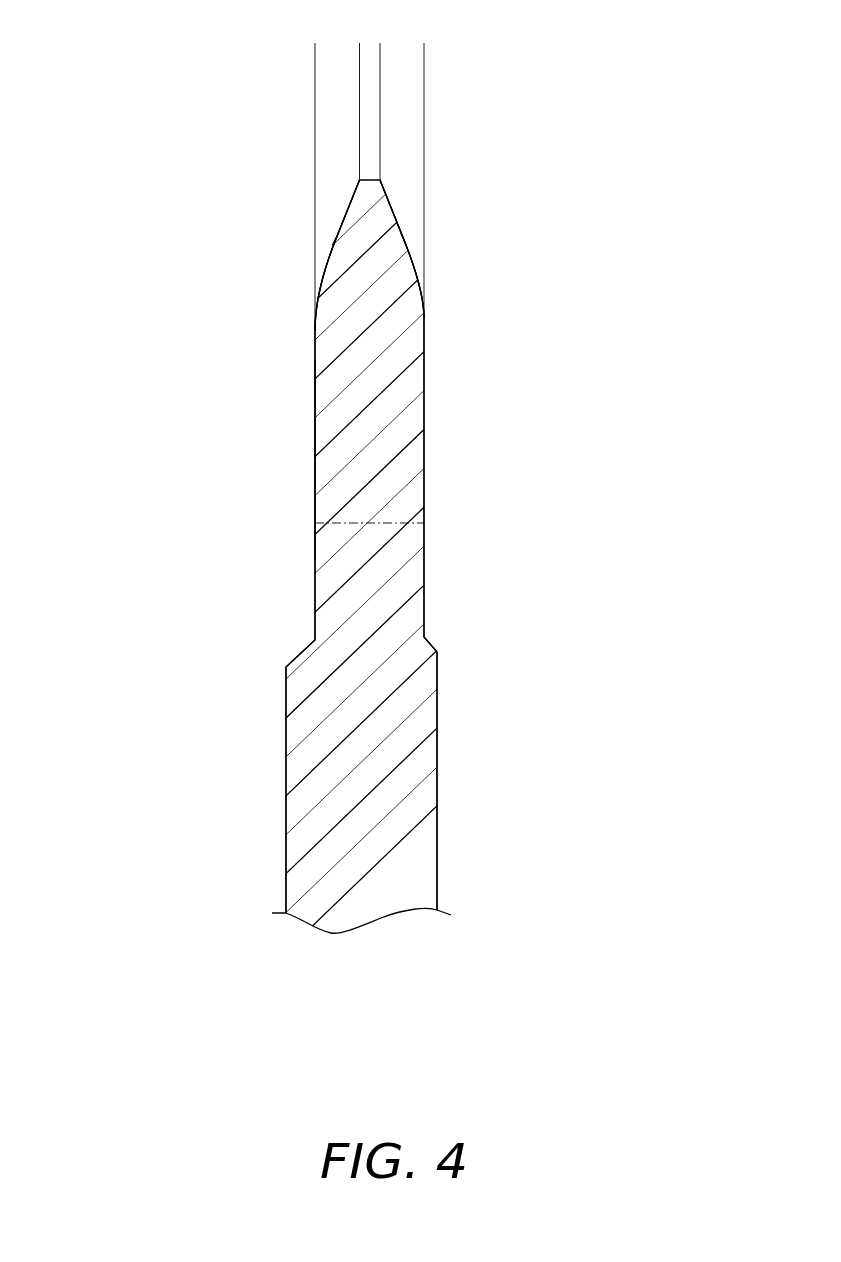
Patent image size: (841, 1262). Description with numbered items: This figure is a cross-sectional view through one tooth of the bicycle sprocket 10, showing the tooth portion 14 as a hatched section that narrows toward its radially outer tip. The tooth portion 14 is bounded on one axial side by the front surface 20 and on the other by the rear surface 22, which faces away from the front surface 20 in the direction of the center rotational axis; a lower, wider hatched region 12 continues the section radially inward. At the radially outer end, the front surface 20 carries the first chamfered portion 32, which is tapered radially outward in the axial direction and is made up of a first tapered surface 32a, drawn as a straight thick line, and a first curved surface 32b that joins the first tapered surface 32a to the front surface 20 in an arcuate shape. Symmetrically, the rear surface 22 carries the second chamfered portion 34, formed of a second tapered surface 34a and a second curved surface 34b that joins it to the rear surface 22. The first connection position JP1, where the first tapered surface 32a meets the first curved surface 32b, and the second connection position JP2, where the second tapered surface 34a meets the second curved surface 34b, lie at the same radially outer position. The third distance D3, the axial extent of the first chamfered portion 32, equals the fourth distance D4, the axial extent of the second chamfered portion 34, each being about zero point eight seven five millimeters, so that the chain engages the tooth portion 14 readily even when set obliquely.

The sprocket 10 is at (528, 392).
The shank portion 12 is at (437, 852).
The tooth portion 14 is at (447, 524).
The front surface 20 is at (424, 375).
The rear surface 22 is at (315, 378).
The first chamfered portion 32 is at (611, 175).
The first tapered surface 32a is at (388, 200).
The first curved surface 32b is at (414, 272).
The second chamfered portion 34 is at (128, 175).
The second tapered surface 34a is at (349, 208).
The second curved surface 34b is at (327, 270).
The first connection position JP1 is at (404, 235).
The second connection position JP2 is at (336, 240).
The third distance D3 is at (424, 53).
The fourth distance D4 is at (393, 75).